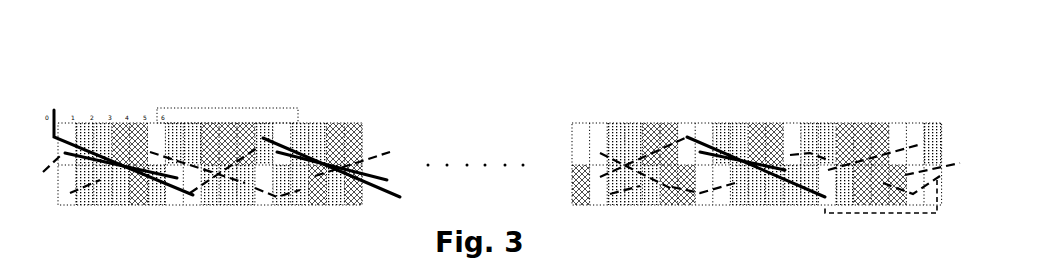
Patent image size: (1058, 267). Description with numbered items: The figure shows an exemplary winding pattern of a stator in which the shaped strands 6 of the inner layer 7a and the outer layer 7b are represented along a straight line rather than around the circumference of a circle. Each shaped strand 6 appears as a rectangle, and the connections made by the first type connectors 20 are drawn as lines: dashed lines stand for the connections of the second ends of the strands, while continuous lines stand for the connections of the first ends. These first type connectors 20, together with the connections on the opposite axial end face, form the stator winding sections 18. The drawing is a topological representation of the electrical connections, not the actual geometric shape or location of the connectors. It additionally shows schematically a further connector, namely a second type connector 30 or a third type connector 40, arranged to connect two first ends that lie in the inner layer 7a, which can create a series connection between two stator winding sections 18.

The shaped strand 6 is at (766, 160).
The inner layer 7a is at (751, 216).
The outer layer 7b is at (752, 111).
The stator winding section 18 is at (280, 134).
The first type connector 20 is at (302, 203).
The second type connector 30 is at (886, 222).
The third type connector 40 is at (852, 215).